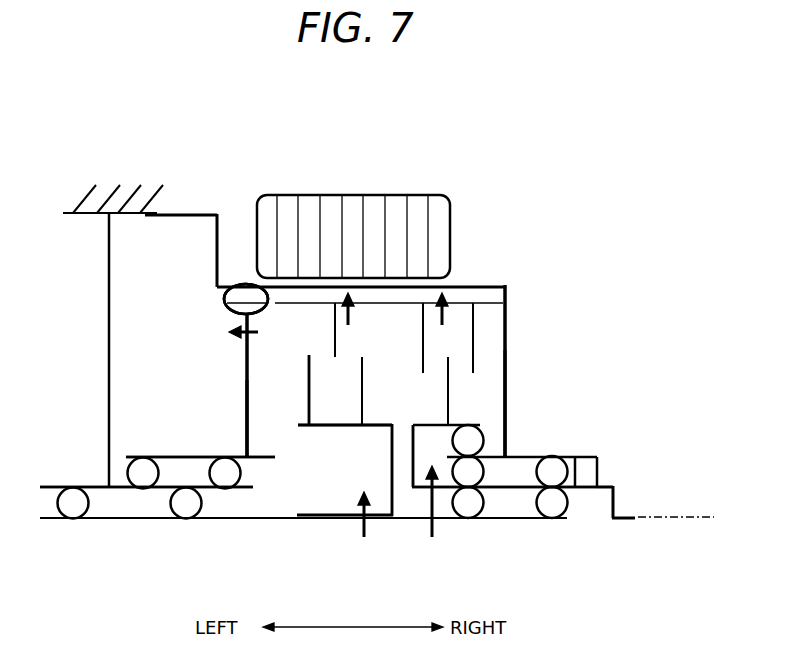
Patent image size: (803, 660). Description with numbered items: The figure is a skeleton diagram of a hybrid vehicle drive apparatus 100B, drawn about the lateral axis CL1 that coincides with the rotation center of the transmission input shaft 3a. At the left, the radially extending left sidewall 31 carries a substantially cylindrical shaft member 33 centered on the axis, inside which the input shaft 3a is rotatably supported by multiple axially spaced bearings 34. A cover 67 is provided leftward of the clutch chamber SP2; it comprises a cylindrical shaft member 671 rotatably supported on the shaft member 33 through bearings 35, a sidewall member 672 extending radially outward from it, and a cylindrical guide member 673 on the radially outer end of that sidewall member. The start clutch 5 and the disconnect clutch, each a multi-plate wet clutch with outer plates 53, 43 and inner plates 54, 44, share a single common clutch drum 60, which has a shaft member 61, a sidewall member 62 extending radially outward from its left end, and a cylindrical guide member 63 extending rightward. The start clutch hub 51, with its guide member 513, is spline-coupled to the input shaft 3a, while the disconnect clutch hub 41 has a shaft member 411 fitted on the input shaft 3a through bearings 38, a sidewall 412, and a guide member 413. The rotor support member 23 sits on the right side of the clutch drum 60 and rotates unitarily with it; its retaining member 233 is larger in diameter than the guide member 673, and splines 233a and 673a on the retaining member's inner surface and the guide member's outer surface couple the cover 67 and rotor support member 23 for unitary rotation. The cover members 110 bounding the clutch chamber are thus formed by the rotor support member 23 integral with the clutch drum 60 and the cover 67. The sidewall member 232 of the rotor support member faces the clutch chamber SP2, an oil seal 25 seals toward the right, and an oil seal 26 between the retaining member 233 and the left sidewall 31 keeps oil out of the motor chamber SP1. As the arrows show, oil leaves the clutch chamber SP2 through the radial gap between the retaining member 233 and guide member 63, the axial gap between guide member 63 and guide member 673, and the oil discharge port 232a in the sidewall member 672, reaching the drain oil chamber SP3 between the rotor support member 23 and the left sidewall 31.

The drive apparatus 100B is at (492, 142).
The rotor support member 23 is at (337, 195).
The cover members 110 is at (370, 278).
The spline 233a is at (243, 284).
The spline 673a is at (246, 299).
The oil seal 26 is at (215, 242).
The drain oil chamber SP3 is at (130, 303).
The guide member 673 is at (240, 305).
The oil discharge port 232a is at (239, 336).
The cover 67 is at (239, 372).
The sidewall member 672 is at (245, 403).
The shaft member 671 is at (200, 460).
The left sidewall 31 is at (108, 403).
The shaft member 33 is at (95, 490).
The bearings 34 is at (70, 518).
The bearings 35 is at (143, 477).
The input shaft 3a is at (122, 518).
The start clutch 5 is at (279, 384).
The outer plates 53 is at (333, 320).
The outer plates 43 is at (422, 322).
The inner plates 44 is at (447, 380).
The retaining member 233 is at (458, 287).
The sidewall member 232 is at (508, 322).
The guide member 63 is at (473, 302).
The clutch drum 60 is at (513, 342).
The sidewall member 62 is at (512, 372).
The motor chamber SP1 is at (474, 246).
The clutch chamber SP2 is at (388, 317).
The inner plates 54 is at (308, 397).
The guide member 513 is at (337, 427).
The clutch hub 51 is at (388, 448).
The clutch hub 41 is at (502, 497).
The sidewall 412 is at (411, 467).
The shaft member 411 is at (520, 488).
The guide member 413 is at (478, 423).
The bearings 38 is at (468, 513).
The shaft member 61 is at (565, 455).
The oil seal 25 is at (598, 470).
The axis CL1 is at (697, 519).